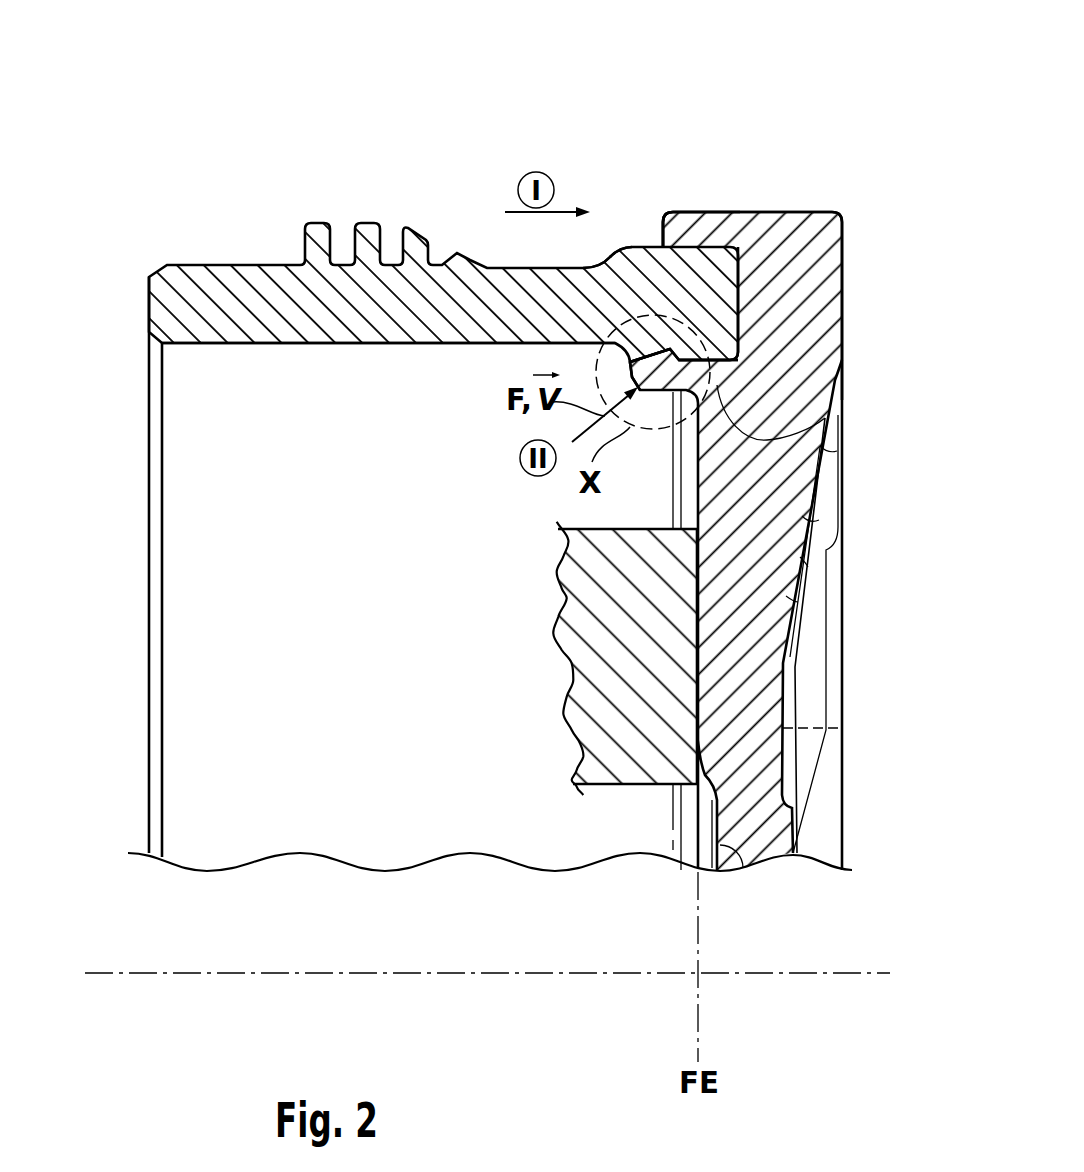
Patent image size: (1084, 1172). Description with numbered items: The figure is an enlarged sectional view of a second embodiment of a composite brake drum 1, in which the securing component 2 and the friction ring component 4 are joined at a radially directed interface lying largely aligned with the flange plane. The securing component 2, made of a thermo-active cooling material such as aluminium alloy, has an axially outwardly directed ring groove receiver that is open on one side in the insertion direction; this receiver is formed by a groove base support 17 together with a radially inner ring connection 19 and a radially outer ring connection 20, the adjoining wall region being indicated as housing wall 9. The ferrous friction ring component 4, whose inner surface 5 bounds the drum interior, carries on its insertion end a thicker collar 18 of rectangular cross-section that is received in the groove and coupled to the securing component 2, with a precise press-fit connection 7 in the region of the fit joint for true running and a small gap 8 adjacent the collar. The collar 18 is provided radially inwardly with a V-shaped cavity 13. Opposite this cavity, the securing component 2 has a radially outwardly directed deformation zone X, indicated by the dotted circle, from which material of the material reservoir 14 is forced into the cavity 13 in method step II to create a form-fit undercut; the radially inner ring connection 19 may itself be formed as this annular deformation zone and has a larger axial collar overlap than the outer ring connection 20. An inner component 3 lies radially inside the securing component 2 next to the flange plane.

The assembly 1 is at (254, 108).
The securing component 2 is at (748, 657).
The inner component 3 is at (617, 653).
The friction ring component 4 is at (420, 308).
The inner surface 5 is at (319, 345).
The press-fit connection 7 is at (828, 418).
The gap 8 is at (717, 376).
The housing wall 9 is at (758, 512).
The V-shaped cavity 13 is at (683, 327).
The material reservoir 14 is at (657, 392).
The groove base support 17 is at (740, 277).
The collar 18 is at (695, 293).
The radially inner ring connection 19 is at (663, 318).
The radially outer ring connection 20 is at (683, 225).